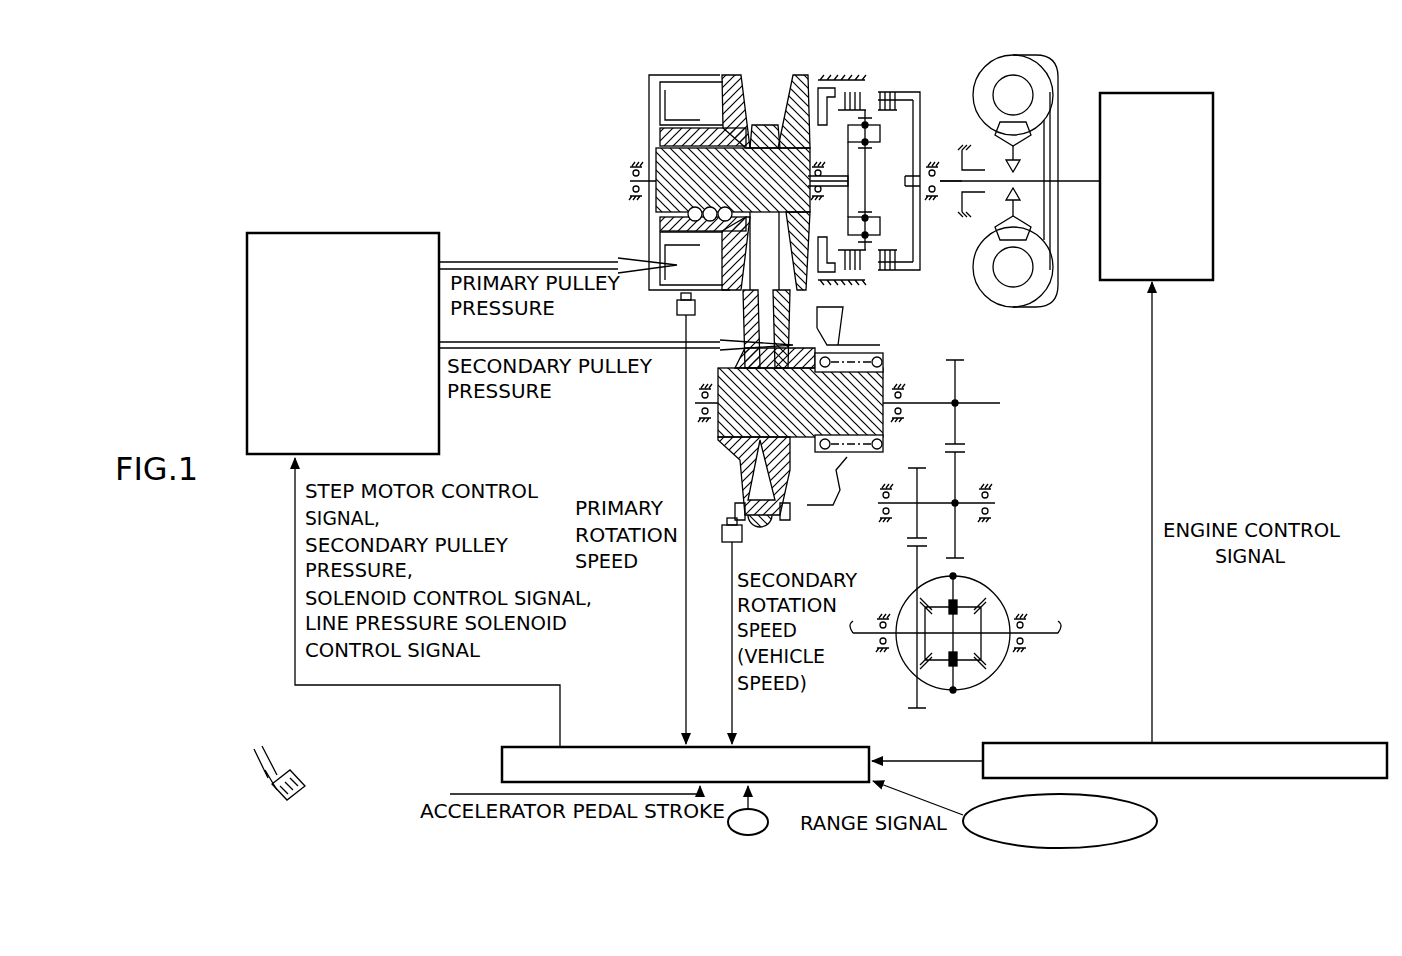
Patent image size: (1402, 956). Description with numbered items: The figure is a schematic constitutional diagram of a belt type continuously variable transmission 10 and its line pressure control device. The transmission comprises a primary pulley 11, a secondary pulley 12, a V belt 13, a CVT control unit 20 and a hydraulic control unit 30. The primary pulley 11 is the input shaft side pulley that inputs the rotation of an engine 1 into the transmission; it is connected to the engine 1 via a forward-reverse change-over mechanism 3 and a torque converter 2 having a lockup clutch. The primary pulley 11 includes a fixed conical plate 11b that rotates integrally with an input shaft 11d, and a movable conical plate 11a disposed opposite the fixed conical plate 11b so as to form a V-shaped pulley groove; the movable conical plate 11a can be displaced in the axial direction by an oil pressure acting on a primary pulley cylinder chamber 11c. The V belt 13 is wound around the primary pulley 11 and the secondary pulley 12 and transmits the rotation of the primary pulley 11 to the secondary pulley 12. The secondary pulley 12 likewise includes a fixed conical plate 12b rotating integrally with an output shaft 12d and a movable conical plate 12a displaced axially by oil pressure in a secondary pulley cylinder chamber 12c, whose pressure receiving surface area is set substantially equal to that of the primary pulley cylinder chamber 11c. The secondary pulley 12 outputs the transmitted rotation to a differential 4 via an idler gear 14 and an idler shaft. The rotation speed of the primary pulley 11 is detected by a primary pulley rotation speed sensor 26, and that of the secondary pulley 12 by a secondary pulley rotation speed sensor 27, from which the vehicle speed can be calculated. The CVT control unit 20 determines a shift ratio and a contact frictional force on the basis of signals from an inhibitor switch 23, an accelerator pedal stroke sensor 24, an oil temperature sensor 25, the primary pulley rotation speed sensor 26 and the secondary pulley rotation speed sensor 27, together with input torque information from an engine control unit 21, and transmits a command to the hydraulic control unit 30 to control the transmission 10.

The engine 1 is at (1132, 93).
The torque converter 2 is at (1014, 52).
The forward-reverse change-over mechanism 3 is at (854, 78).
The differential 4 is at (996, 585).
The belt type continuously variable transmission 10 is at (720, 73).
The primary pulley 11 is at (738, 154).
The movable conical plate 11a is at (772, 62).
The fixed conical plate 11b is at (808, 80).
The primary pulley cylinder chamber 11c is at (702, 90).
The input shaft 11d is at (952, 195).
The secondary pulley 12 is at (845, 431).
The movable conical plate 12a is at (788, 516).
The fixed conical plate 12b is at (742, 466).
The secondary pulley cylinder chamber 12c is at (812, 505).
The output shaft 12d is at (908, 390).
The V belt 13 is at (860, 284).
The idler gear 14 is at (917, 478).
The CVT control unit 20 is at (508, 760).
The engine control unit 21 is at (992, 750).
The inhibitor switch 23 is at (1142, 810).
The accelerator pedal stroke sensor 24 is at (275, 778).
The oil temperature sensor 25 is at (748, 836).
The primary pulley rotation speed sensor 26 is at (677, 308).
The secondary pulley rotation speed sensor 27 is at (722, 535).
The hydraulic control unit 30 is at (338, 246).